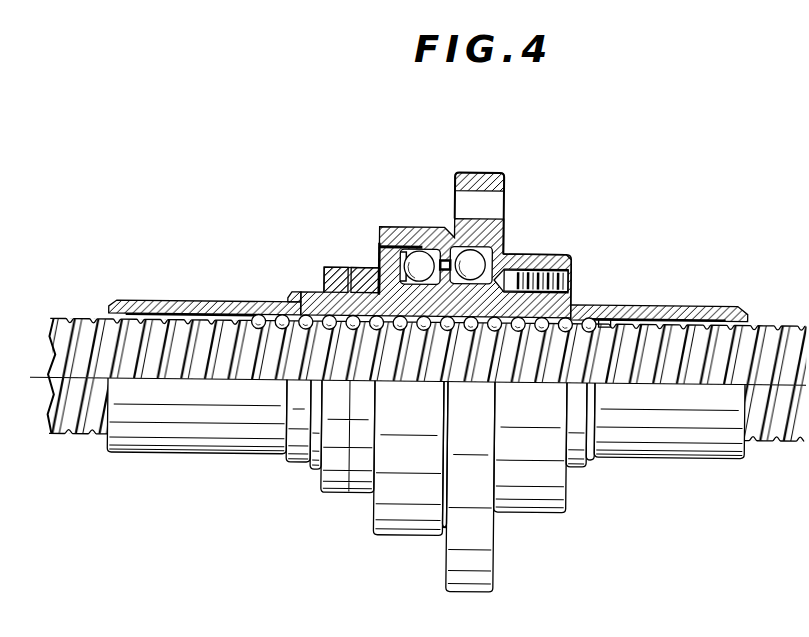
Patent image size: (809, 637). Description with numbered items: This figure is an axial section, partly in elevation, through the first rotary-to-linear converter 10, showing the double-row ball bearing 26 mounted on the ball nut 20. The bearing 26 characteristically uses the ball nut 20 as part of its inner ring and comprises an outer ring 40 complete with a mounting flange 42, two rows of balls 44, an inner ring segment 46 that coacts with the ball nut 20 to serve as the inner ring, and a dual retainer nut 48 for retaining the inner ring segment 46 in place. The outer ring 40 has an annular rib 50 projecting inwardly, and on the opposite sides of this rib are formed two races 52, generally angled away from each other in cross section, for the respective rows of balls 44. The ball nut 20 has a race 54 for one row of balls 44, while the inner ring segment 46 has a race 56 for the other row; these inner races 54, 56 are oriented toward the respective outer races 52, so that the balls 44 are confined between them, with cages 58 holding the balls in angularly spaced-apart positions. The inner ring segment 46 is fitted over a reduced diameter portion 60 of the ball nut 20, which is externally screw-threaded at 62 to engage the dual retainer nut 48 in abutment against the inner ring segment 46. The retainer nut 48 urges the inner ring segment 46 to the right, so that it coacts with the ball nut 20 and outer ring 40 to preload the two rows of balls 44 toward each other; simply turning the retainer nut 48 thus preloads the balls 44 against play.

The rotary-to-linear converter 10 is at (348, 506).
The ball nut 20 is at (568, 256).
The bearing 26 is at (497, 167).
The outer ring 40 is at (406, 228).
The mounting flange 42 is at (467, 177).
The balls 44 is at (462, 282).
The inner ring segment 46 is at (380, 262).
The dual retainer nut 48 is at (334, 268).
The annular rib 50 is at (472, 247).
The races 52 is at (484, 258).
The race 54 is at (499, 270).
The race 56 is at (403, 252).
The cages 58 is at (423, 280).
The reduced diameter portion 60 is at (368, 270).
The screw threads 62 is at (310, 293).